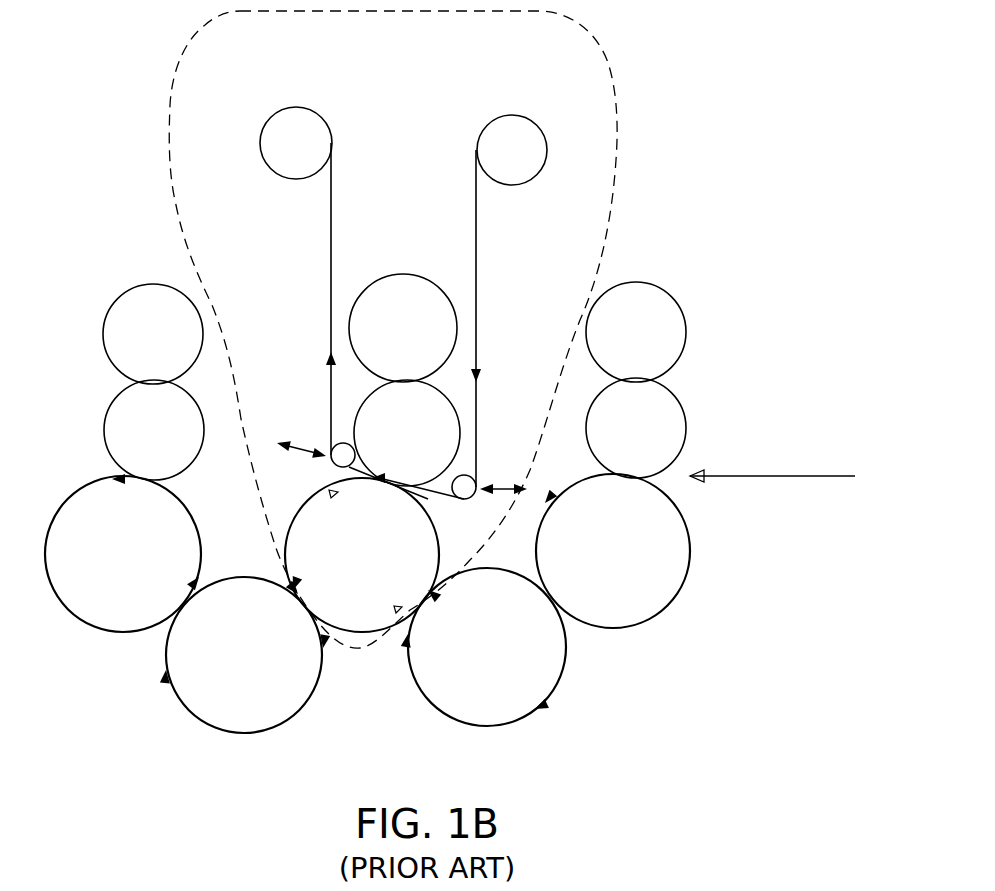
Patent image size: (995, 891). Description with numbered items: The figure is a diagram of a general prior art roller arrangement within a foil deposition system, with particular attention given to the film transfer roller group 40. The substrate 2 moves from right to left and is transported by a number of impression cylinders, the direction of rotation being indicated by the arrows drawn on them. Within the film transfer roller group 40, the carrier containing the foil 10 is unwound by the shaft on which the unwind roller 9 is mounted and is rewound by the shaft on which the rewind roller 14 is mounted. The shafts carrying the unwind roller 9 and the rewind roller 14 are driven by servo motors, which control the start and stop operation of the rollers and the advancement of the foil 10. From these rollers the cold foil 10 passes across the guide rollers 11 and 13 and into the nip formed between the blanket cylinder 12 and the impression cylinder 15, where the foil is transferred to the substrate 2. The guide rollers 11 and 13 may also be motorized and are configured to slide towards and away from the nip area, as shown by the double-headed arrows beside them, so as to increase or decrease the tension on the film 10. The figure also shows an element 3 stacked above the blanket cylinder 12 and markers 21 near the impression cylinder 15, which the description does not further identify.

The film transfer roller group 40 is at (604, 62).
The rewind roller 14 is at (269, 132).
The unwind roller 9 is at (537, 132).
The foil 10 is at (330, 236).
The roller 3 is at (402, 275).
The blanket cylinder 12 is at (372, 404).
The guide roller 13 is at (337, 447).
The guide roller 11 is at (471, 478).
The nip / contact region 21 is at (331, 492).
The impression cylinder 15 is at (438, 550).
The substrate 2 is at (770, 475).